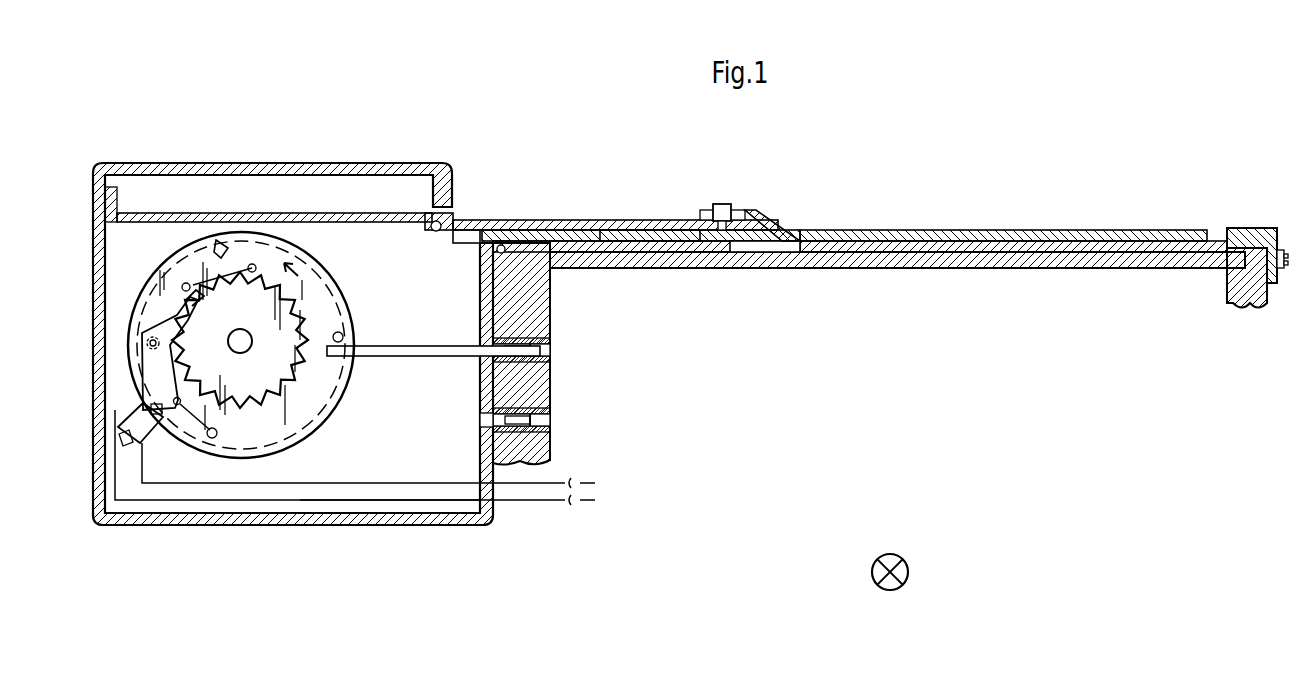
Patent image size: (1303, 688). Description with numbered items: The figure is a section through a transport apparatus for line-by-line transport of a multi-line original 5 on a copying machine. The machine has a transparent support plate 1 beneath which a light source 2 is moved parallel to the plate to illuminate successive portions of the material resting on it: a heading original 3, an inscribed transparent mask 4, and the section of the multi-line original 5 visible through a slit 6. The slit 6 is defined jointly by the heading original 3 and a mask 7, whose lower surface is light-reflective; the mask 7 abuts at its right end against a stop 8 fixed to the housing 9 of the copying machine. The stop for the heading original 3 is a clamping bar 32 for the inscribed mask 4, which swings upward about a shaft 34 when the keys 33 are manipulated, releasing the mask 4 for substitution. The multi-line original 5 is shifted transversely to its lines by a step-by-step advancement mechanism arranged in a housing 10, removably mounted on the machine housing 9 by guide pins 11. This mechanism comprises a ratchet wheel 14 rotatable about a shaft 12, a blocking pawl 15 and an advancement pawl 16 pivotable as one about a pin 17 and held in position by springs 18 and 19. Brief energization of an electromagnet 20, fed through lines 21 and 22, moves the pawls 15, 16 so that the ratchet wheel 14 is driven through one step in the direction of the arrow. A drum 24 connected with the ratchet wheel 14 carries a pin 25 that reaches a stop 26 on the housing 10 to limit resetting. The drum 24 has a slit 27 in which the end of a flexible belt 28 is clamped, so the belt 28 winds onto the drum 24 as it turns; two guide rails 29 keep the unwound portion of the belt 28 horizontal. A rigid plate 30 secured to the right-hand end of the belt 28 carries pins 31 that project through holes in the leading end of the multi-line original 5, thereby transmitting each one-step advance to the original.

The transparent support plate 1 is at (1172, 262).
The light source 2 is at (906, 567).
The heading original 3 is at (622, 235).
The inscribed transparent mask 4 is at (672, 246).
The multi-line original 5 is at (1078, 233).
The slit 6 is at (786, 242).
The mask 7 is at (1138, 244).
The stop 8 is at (1253, 229).
The housing of the copying machine 9 is at (1245, 299).
The housing 10 is at (95, 168).
The guide pins 11 is at (532, 354).
The shaft 12 is at (242, 348).
The ratchet wheel 14 is at (275, 378).
The blocking pawl 15 is at (165, 305).
The advancement pawl 16 is at (170, 430).
The pin 17 is at (163, 340).
The spring 18 is at (192, 283).
The spring 19 is at (190, 419).
The electromagnet 20 is at (130, 442).
The line 21 is at (440, 484).
The line 22 is at (383, 500).
The drum 24 is at (262, 253).
The pin 25 is at (346, 334).
The stop 26 is at (450, 357).
The slit 27 is at (223, 248).
The flexible belt 28 is at (405, 232).
The guide rails 29 is at (340, 212).
The rigid plate 30 is at (583, 224).
The pins 31 is at (722, 205).
The clamping bar 32 is at (527, 238).
The keys 33 is at (467, 234).
The shaft 34 is at (481, 253).